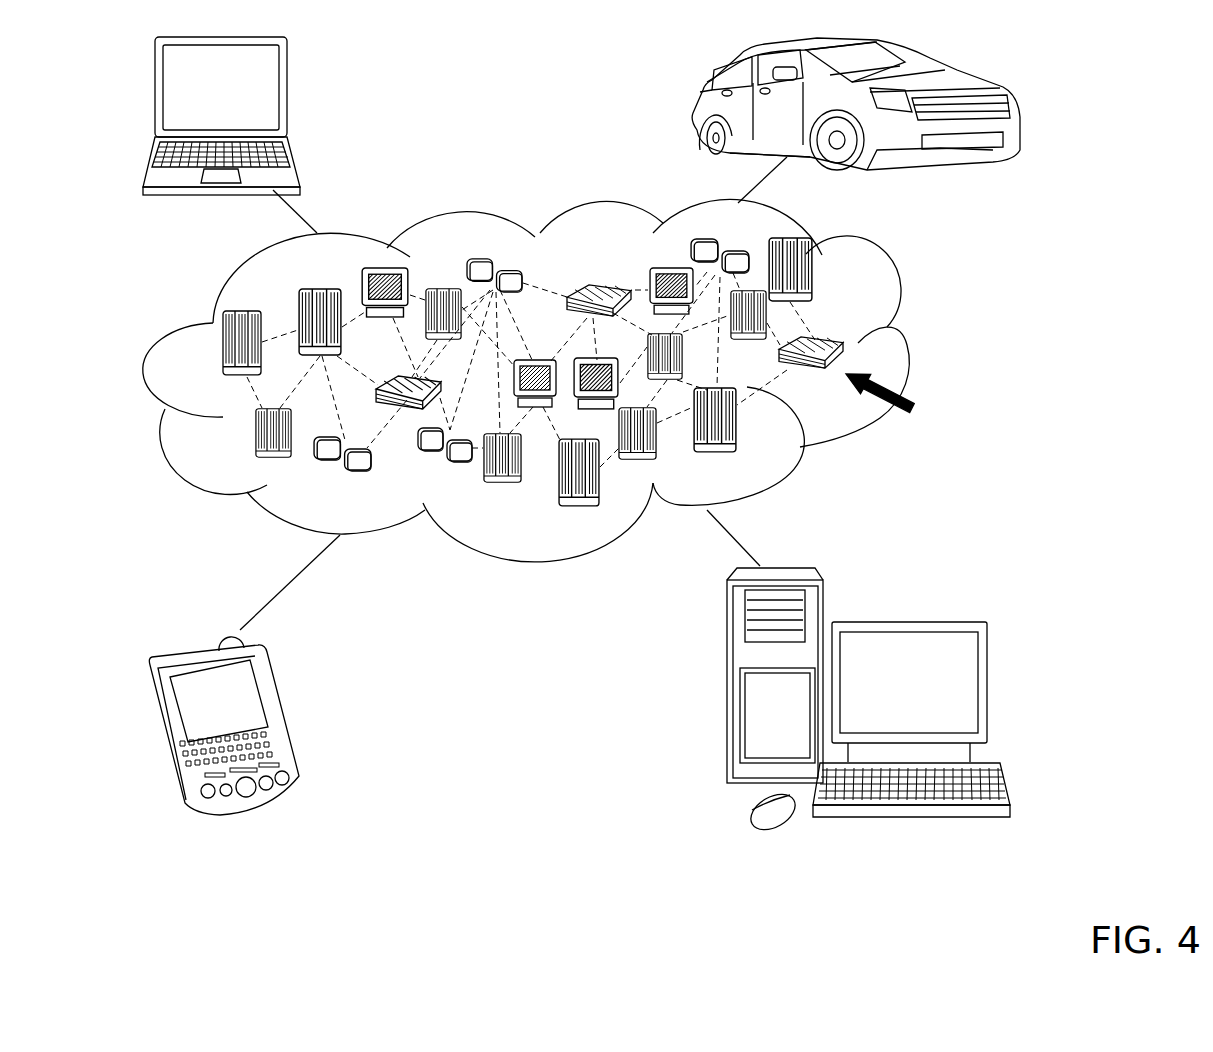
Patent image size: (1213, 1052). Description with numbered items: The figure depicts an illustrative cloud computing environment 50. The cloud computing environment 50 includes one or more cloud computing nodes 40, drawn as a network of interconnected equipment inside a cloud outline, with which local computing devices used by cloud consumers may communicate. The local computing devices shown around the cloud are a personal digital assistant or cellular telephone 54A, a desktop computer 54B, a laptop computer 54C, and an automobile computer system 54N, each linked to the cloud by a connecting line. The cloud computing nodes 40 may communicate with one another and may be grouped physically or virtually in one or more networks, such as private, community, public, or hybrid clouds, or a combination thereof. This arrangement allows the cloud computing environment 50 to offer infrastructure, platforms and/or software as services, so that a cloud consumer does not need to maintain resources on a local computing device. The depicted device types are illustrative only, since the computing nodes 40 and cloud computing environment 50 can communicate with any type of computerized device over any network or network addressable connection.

The personal digital assistant (PDA) or cellular telephone 54A is at (283, 712).
The desktop computer 54B is at (905, 622).
The laptop computer 54C is at (287, 93).
The automobile computer system 54N is at (698, 112).
The cloud computing environment 50 is at (905, 348).
The cloud computing nodes 40 is at (897, 398).